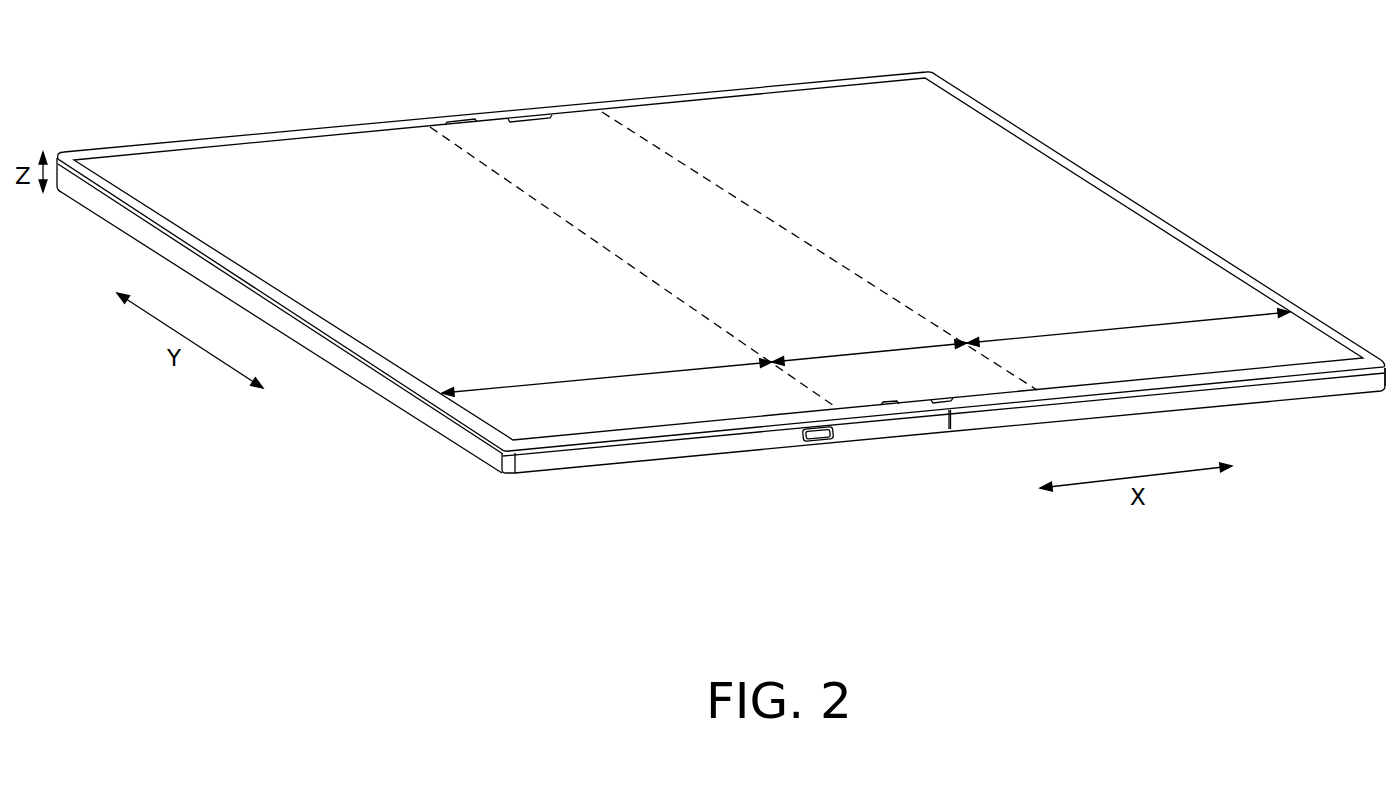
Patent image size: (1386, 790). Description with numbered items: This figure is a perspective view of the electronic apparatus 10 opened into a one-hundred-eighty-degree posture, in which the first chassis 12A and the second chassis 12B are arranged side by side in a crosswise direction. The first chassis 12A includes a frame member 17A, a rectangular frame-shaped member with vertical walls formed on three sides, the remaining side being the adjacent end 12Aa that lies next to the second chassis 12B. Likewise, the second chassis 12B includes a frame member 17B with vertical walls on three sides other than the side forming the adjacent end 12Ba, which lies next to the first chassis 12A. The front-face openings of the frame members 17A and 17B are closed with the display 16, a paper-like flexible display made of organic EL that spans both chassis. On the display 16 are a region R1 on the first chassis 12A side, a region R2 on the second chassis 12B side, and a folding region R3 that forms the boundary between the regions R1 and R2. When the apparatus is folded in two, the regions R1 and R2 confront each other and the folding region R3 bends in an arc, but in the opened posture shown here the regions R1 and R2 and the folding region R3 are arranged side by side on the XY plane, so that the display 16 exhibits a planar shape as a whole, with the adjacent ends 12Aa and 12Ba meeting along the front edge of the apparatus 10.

The electronic apparatus 10 is at (101, 57).
The display 16 is at (958, 142).
The first chassis 12A is at (655, 478).
The second chassis 12B is at (1282, 420).
The adjacent end 12Aa is at (953, 428).
The adjacent end 12Ba is at (950, 423).
The frame member 17A is at (553, 466).
The frame member 17B is at (1340, 388).
The region R1 is at (607, 373).
The region R2 is at (1128, 323).
The folding region R3 is at (869, 345).